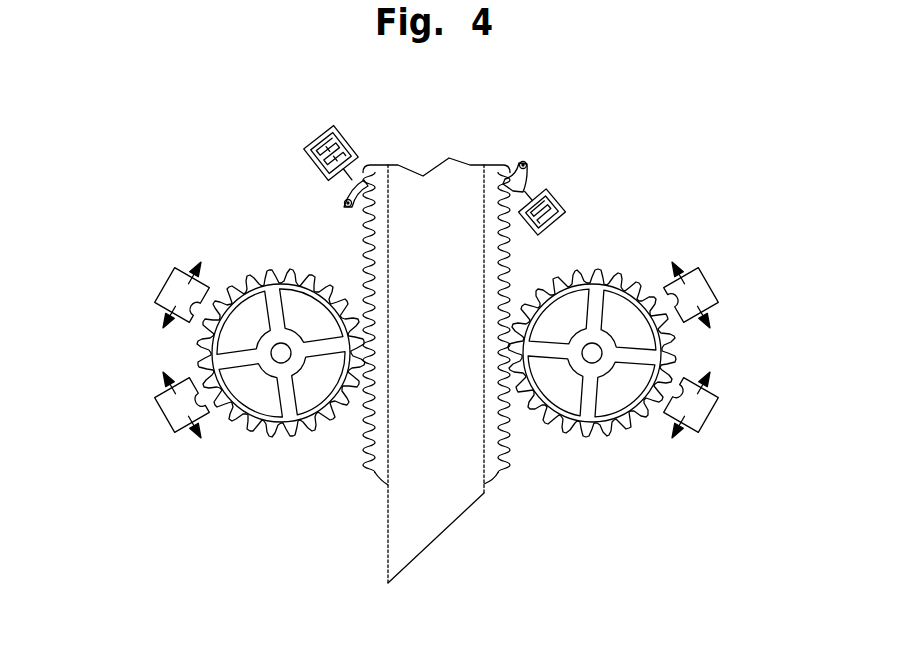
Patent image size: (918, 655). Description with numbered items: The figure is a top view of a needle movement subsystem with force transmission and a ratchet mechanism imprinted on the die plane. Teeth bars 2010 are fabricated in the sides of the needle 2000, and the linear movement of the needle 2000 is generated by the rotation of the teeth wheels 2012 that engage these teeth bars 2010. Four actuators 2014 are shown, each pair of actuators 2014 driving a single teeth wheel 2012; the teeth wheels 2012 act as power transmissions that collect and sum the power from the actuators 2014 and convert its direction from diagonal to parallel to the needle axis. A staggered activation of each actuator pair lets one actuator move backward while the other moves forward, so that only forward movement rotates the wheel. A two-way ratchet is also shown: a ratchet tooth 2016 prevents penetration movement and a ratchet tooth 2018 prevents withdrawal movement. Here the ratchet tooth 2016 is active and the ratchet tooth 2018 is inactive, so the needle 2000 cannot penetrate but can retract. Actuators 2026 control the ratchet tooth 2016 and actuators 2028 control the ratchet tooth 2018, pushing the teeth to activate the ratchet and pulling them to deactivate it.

The needle 2000 is at (420, 562).
The teeth bars 2010 is at (375, 478).
The teeth wheels 2012 is at (238, 442).
The actuators 2014 is at (150, 303).
The ratchet tooth 2016 is at (340, 207).
The ratchet tooth 2018 is at (532, 168).
The actuators 2026 is at (317, 133).
The actuators 2028 is at (571, 200).